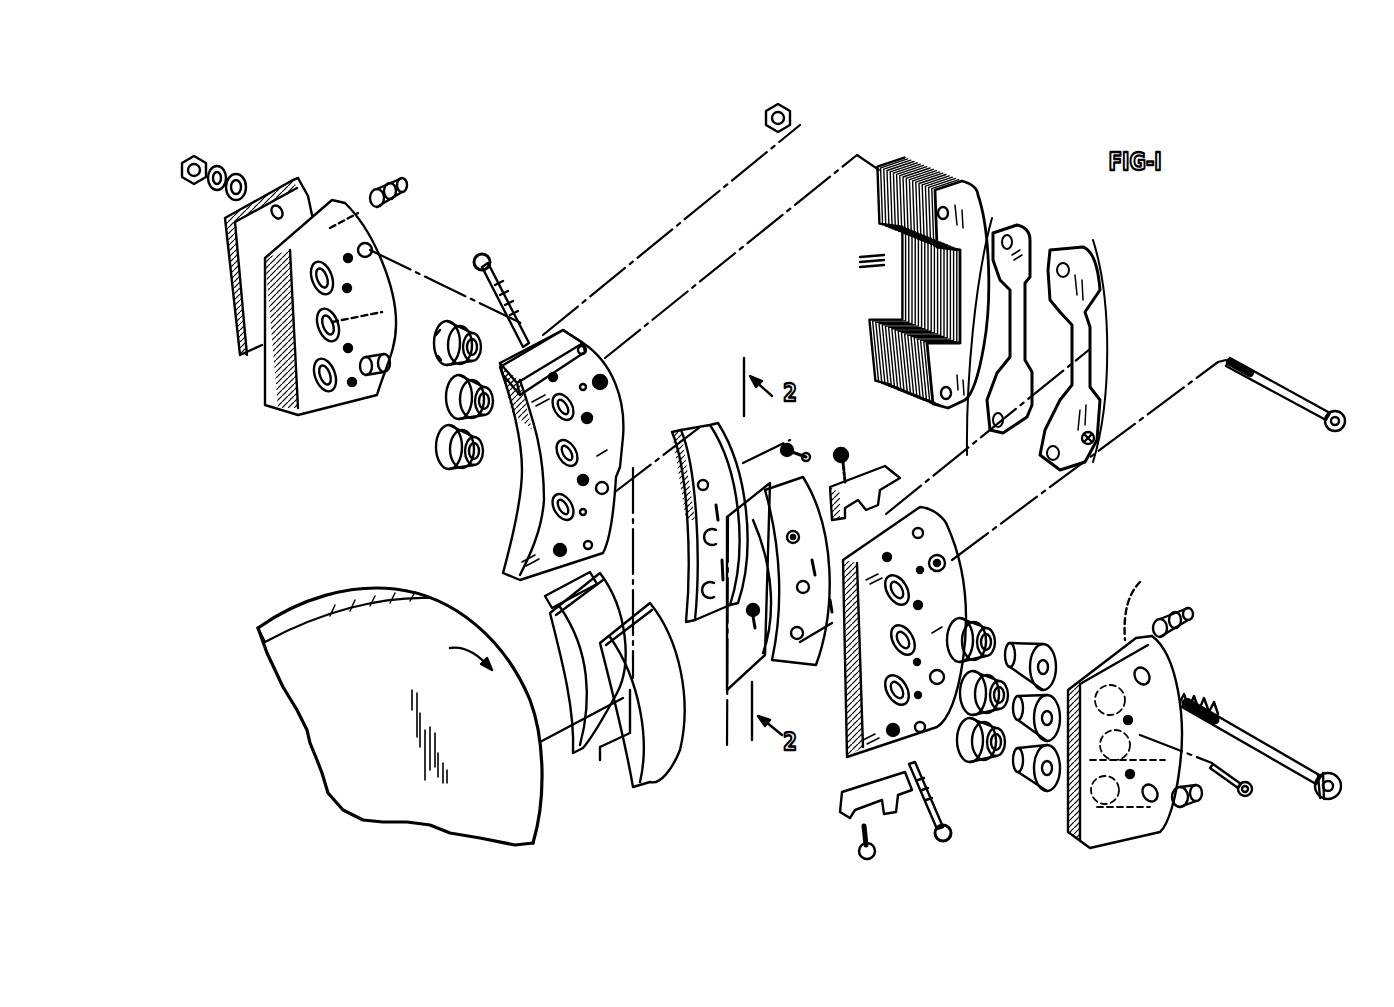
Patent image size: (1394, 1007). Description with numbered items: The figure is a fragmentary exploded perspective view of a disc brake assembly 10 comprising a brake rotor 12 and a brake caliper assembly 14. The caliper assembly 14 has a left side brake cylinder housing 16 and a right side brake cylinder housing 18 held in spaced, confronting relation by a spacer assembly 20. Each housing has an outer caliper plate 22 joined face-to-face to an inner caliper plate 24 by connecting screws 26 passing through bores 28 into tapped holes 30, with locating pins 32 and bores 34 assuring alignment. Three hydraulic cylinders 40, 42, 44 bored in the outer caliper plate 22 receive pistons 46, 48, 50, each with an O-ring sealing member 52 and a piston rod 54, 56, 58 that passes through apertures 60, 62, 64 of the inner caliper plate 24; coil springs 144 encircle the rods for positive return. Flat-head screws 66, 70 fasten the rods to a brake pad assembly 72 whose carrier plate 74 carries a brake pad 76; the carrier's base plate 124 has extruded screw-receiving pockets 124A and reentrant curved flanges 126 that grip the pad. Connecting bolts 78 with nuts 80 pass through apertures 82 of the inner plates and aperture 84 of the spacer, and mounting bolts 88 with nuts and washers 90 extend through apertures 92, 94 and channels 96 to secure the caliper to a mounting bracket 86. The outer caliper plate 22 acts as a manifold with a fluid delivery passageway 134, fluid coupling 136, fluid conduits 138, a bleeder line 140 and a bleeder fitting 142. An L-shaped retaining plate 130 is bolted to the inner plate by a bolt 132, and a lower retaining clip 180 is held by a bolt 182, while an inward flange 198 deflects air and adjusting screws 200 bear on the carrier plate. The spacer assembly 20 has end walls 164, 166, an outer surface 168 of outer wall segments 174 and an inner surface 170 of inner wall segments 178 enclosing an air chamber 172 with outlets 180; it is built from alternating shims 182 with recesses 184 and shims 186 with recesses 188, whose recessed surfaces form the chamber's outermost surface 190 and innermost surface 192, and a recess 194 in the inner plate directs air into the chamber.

The disc brake assembly 10 is at (372, 533).
The brake rotor 12 is at (325, 627).
The brake caliper assembly 14 is at (1082, 533).
The left side brake cylinder housing 16 is at (465, 213).
The right side brake cylinder housing 18 is at (1112, 604).
The spacer assembly 20 is at (978, 190).
The outer caliper plate 22 is at (388, 248).
The inner caliper plate 24 is at (627, 364).
The connecting screws 26 is at (1232, 790).
The bores 28 is at (1207, 714).
The tapped holes 30 is at (921, 603).
The locating pins 32 is at (353, 388).
The bores 34 is at (596, 347).
The hydraulic cylinder 40 is at (232, 312).
The hydraulic cylinder 42 is at (282, 364).
The hydraulic cylinder 44 is at (275, 390).
The piston 46 is at (440, 386).
The piston 48 is at (446, 414).
The piston 50 is at (437, 446).
The O-ring sealing member 52 is at (446, 305).
The piston rod 54 is at (1030, 644).
The piston rod 56 is at (1008, 748).
The piston rod 58 is at (1017, 785).
The aperture 60 is at (520, 472).
The aperture 62 is at (520, 500).
The aperture 64 is at (520, 520).
The flat-head screw 66 is at (798, 446).
The flat-head screw 70 is at (750, 620).
The brake pad assembly 72 is at (732, 758).
The carrier plate 74 is at (752, 665).
The brake pad 76 is at (605, 770).
The connecting bolts 78 is at (1285, 390).
The nut 80 is at (762, 119).
The aperture 82 is at (930, 530).
The aperture 84 is at (583, 390).
The mounting bracket 86 is at (306, 190).
The mounting bolt 88 is at (1282, 752).
The nuts and washers 90 is at (231, 154).
The aperture 92 is at (373, 254).
The aperture 94 is at (612, 374).
The channel 96 is at (1022, 258).
The base plate 124 is at (737, 448).
The screw-receiving pocket 124A is at (708, 537).
The reentrant curved flange 126 is at (680, 430).
The brake pad retaining plate 130 is at (530, 322).
The bolt 132 is at (850, 458).
The fluid delivery passageway 134 is at (330, 405).
The fluid coupling 136 is at (388, 356).
The fluid conduits 138 is at (322, 302).
The bleeder line 140 is at (350, 200).
The bleeder fitting 142 is at (402, 185).
The coil spring 144 is at (985, 628).
The first end wall 164 is at (890, 246).
The second end wall 166 is at (1105, 385).
The outer surface 168 is at (988, 212).
The inner surface 170 is at (878, 287).
The air chamber 172 is at (884, 310).
The outer wall segments 174 is at (1100, 352).
The inner wall segments 178 is at (1020, 346).
The air outlets 180 is at (552, 590).
The shims 182 is at (858, 840).
The recesses 184 is at (1045, 425).
The shims 186 is at (980, 380).
The recesses 188 is at (1026, 310).
The outermost surface 190 is at (985, 232).
The innermost surface 192 is at (884, 328).
The recess 194 is at (612, 420).
The flange 198 is at (506, 545).
The adjusting screws 200 is at (493, 262).